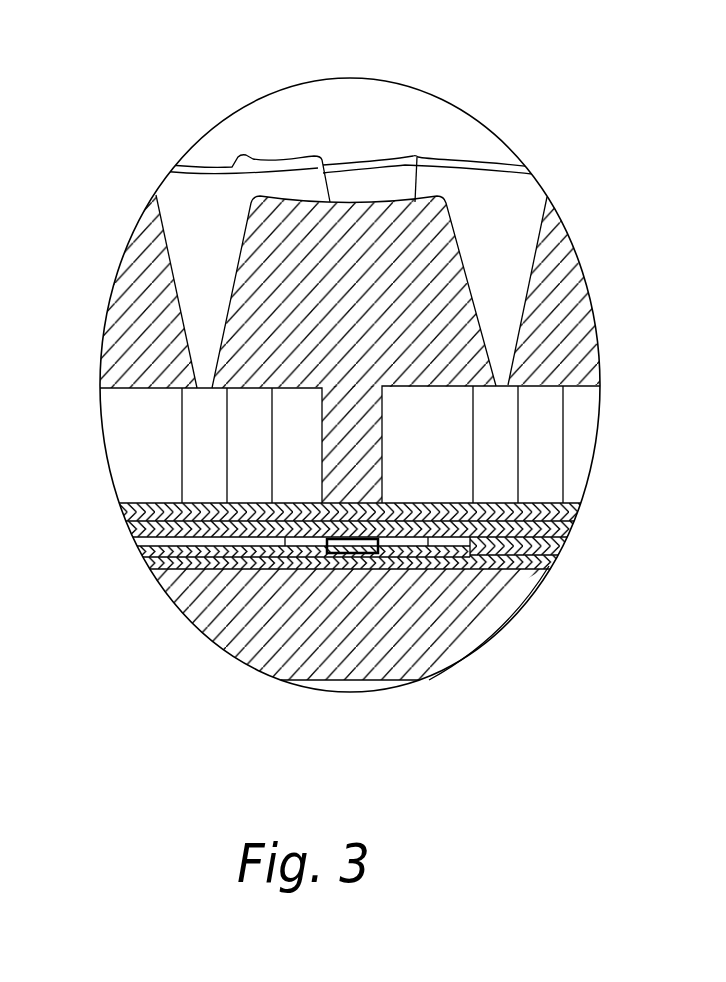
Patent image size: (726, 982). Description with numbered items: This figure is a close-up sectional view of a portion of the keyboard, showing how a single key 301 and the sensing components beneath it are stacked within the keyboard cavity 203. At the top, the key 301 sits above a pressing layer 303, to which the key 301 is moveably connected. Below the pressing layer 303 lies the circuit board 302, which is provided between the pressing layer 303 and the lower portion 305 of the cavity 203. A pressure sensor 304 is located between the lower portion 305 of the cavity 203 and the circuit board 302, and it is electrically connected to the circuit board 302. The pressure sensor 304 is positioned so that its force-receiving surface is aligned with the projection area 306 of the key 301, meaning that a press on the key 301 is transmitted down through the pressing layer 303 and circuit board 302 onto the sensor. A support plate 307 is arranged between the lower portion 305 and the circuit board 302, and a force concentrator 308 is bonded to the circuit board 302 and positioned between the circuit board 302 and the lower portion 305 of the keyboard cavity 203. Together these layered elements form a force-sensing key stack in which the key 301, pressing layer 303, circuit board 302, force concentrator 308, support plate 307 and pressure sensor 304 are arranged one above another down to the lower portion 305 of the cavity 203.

The cavity 203 is at (460, 652).
The key 301 is at (382, 223).
The circuit board 302 is at (570, 525).
The pressing layer 303 is at (582, 512).
The pressure sensor 304 is at (290, 553).
The lower portion 305 is at (355, 650).
The projection area 306 is at (376, 463).
The support plate 307 is at (562, 553).
The force concentrator 308 is at (430, 555).